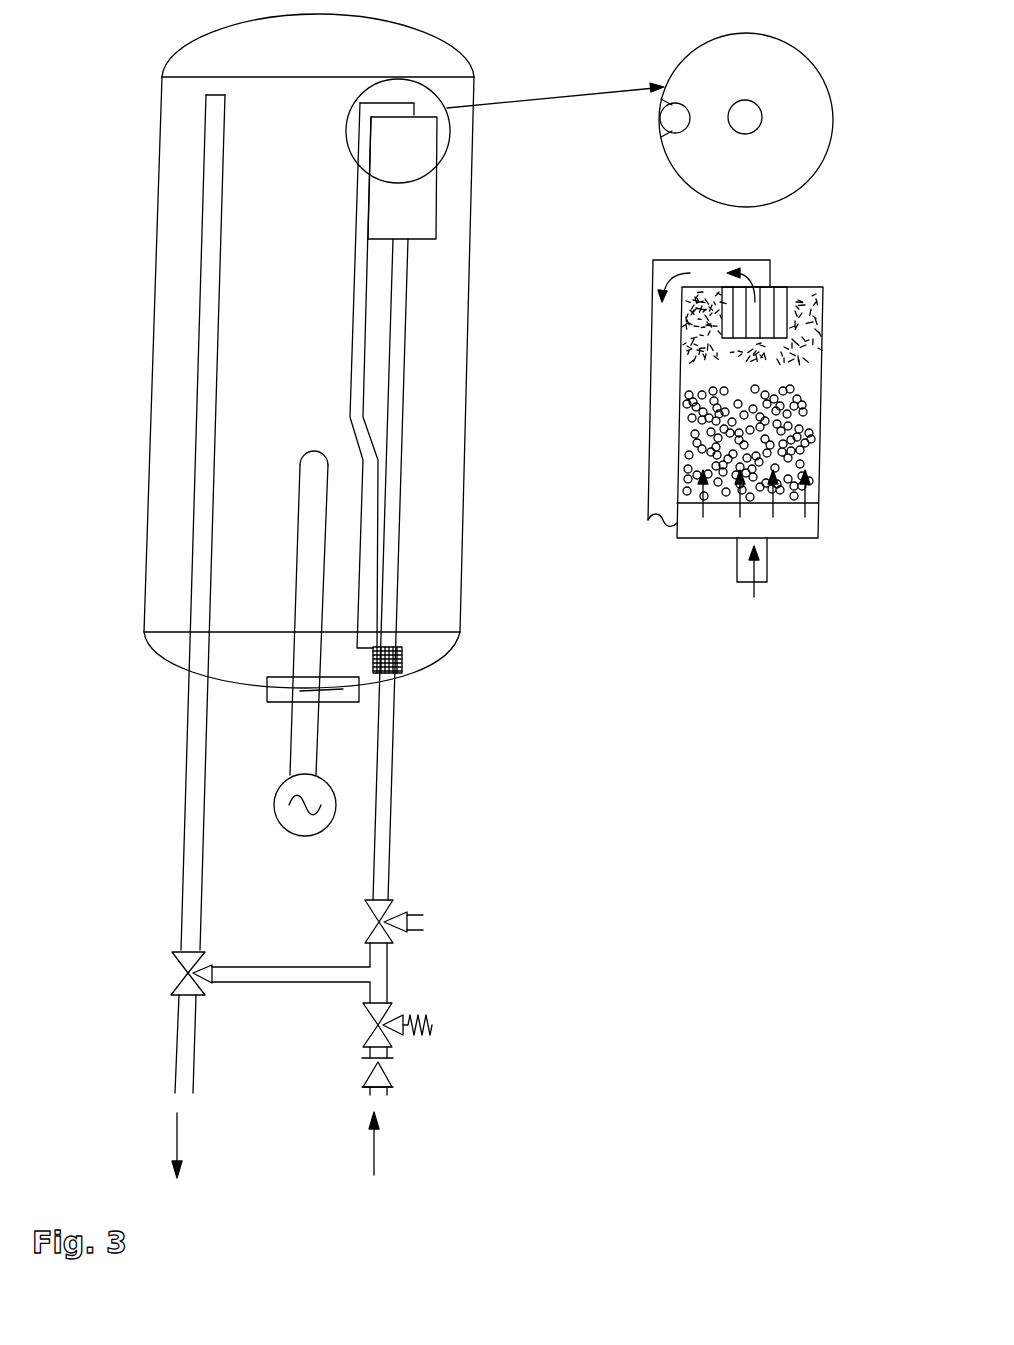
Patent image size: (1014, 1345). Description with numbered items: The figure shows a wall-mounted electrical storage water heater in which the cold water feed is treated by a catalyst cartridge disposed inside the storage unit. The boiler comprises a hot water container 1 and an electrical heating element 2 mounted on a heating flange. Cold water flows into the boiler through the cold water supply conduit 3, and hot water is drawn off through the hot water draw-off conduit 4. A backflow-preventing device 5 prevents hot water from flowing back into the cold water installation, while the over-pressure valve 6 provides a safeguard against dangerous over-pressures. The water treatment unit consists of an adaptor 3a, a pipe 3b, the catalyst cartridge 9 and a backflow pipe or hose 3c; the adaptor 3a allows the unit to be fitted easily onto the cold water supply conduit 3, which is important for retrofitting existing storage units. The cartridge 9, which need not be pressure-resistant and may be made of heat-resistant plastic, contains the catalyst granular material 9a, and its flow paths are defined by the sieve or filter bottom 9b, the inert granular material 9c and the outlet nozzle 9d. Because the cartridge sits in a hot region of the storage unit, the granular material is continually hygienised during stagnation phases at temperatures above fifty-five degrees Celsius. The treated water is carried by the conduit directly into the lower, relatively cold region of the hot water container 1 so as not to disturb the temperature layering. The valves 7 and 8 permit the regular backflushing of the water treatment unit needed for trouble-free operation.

The hot water container 1 is at (140, 485).
The electrical heating element 2 is at (342, 563).
The cold water supply conduit 3 is at (373, 1165).
The adaptor 3a is at (408, 665).
The pipe 3b is at (413, 337).
The backflow pipe or hose 3c is at (373, 422).
The hot water draw-off conduit 4 is at (176, 1165).
The backflow-preventing device 5 is at (353, 1083).
The over-pressure valve 6 is at (407, 1015).
The valve 7 is at (412, 923).
The valve 8 is at (167, 975).
The catalyst cartridge 9 is at (443, 178).
The catalyst granular material 9a is at (810, 412).
The sieve or filter bottom 9b is at (818, 507).
The inert granular material 9c is at (810, 338).
The outlet nozzle 9d is at (780, 295).